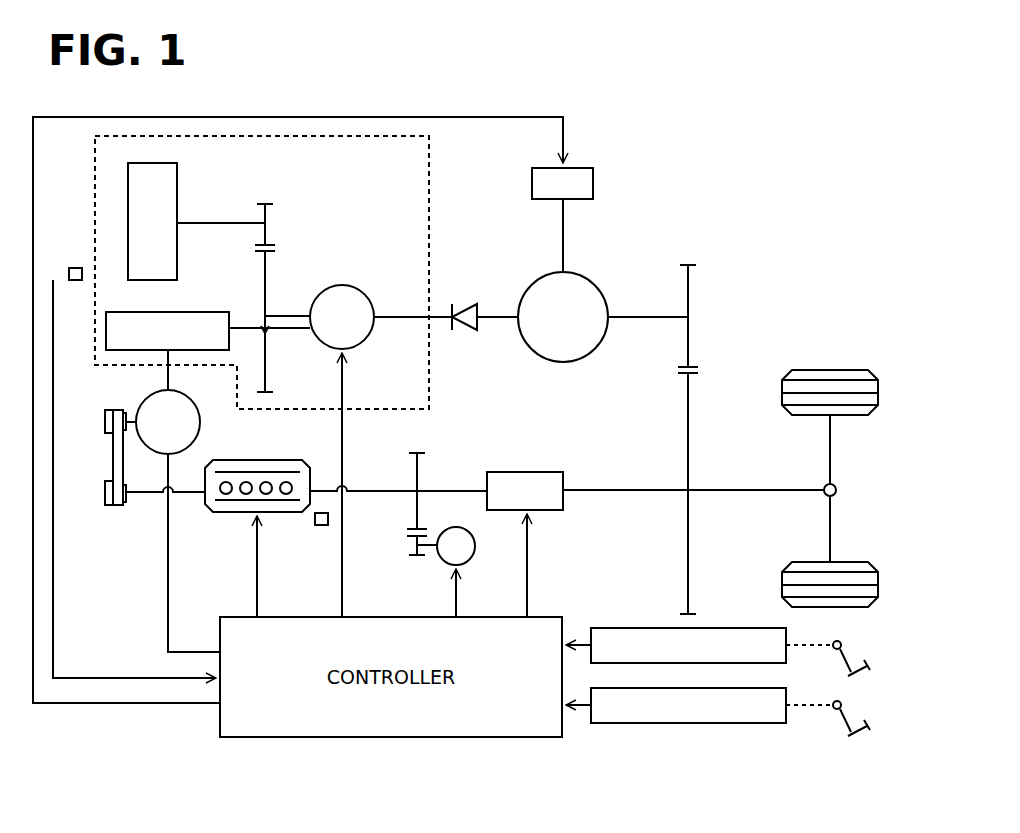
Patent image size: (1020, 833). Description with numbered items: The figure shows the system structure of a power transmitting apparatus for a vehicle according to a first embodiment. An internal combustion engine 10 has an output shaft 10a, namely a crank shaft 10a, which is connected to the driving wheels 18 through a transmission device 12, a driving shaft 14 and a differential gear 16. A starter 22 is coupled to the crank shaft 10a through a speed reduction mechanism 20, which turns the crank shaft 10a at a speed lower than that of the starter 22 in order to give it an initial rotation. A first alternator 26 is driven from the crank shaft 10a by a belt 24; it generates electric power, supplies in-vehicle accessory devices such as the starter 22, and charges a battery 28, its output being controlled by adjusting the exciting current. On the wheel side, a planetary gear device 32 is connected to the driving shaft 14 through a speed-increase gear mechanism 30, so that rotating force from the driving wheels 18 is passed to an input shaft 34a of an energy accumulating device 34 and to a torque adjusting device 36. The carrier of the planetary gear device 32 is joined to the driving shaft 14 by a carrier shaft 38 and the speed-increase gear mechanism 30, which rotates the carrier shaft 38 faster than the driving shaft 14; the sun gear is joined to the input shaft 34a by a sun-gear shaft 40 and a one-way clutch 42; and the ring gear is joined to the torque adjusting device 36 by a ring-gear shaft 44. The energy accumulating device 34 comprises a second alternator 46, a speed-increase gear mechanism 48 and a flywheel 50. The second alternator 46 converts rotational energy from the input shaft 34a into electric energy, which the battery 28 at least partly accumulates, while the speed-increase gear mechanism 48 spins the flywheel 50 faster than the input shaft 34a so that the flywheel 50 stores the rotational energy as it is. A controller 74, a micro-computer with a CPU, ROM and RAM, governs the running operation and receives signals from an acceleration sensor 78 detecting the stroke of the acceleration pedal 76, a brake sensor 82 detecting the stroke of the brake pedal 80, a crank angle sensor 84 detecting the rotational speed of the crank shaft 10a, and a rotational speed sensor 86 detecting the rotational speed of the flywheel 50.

The internal combustion engine 10 is at (257, 460).
The output shaft 10a is at (145, 492).
The transmission device 12 is at (545, 510).
The driving shaft 14 is at (735, 488).
The differential gear 16 is at (838, 485).
The driving wheels 18 is at (850, 370).
The speed reduction mechanism 20 is at (397, 546).
The starter 22 is at (445, 562).
The belt 24 is at (105, 450).
The first alternator 26 is at (140, 395).
The battery 28 is at (212, 312).
The speed-increase gear mechanism 30 is at (718, 360).
The planetary gear device 32 is at (625, 341).
The energy accumulating device 34 is at (432, 170).
The input shaft 34a is at (400, 316).
The torque adjusting device 36 is at (594, 183).
The carrier shaft 38 is at (637, 316).
The sun-gear shaft 40 is at (497, 316).
The one-way clutch 42 is at (458, 303).
The ring-gear shaft 44 is at (565, 238).
The second alternator 46 is at (340, 285).
The speed-increase gear mechanism 48 is at (293, 238).
The flywheel 50 is at (178, 173).
The controller 74 is at (530, 608).
The acceleration pedal 76 is at (842, 646).
The acceleration sensor 78 is at (728, 628).
The brake pedal 80 is at (842, 706).
The brake sensor 82 is at (728, 723).
The crank angle sensor 84 is at (315, 520).
The rotational speed sensor 86 is at (75, 268).